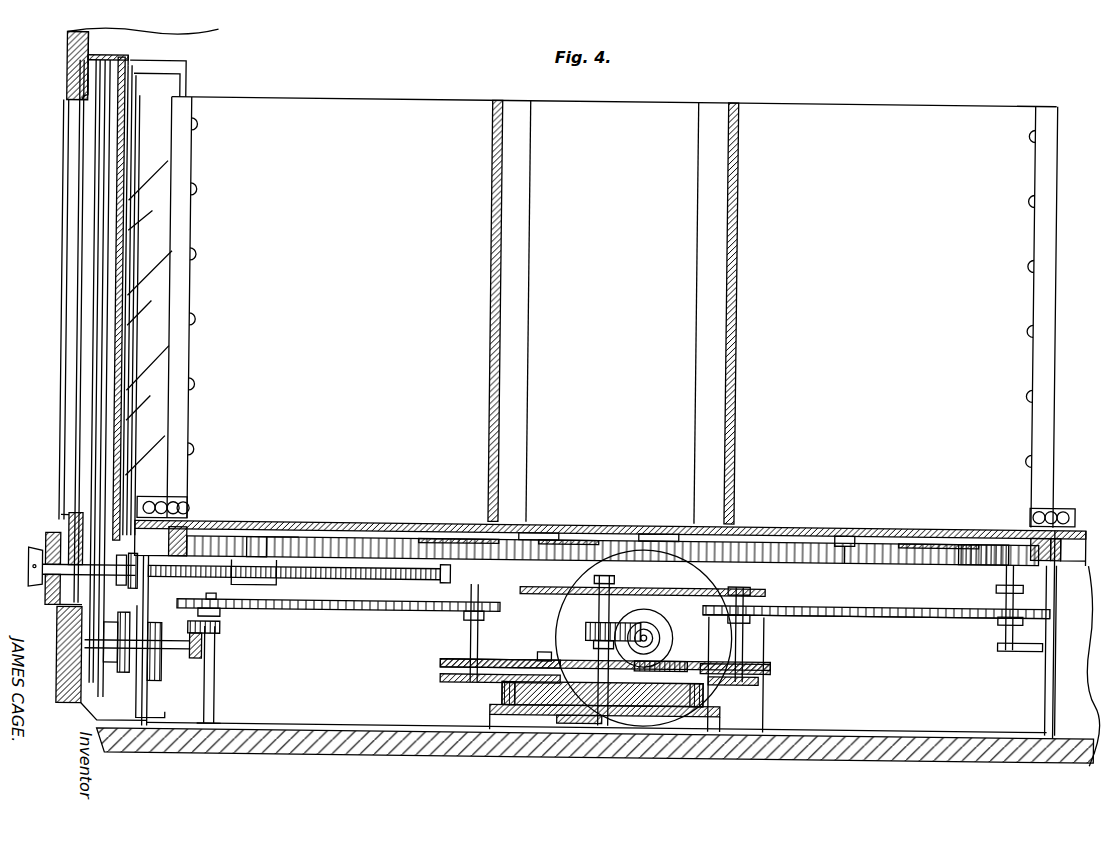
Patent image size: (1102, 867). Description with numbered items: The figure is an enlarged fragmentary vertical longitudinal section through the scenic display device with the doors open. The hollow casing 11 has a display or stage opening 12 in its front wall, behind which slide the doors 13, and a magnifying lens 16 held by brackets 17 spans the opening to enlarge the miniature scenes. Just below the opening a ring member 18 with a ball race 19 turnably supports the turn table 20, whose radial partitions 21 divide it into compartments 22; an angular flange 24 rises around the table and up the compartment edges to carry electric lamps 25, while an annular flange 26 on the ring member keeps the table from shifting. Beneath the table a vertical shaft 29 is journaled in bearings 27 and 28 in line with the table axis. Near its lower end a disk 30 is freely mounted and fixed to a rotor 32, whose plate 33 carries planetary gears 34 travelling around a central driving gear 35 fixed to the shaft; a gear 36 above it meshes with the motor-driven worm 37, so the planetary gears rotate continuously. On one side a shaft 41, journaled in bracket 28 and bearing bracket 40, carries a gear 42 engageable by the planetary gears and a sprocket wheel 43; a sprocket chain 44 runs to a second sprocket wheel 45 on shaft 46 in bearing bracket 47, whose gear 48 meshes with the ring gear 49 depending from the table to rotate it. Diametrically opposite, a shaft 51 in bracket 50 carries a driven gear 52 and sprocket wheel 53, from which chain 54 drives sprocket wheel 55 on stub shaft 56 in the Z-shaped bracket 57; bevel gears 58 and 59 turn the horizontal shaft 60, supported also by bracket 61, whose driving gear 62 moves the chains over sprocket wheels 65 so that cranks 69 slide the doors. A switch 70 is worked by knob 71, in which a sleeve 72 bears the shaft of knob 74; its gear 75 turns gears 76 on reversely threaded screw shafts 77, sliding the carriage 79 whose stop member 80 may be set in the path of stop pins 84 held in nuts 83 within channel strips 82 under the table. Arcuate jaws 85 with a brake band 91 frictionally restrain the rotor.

The hollow casing 11 is at (790, 760).
The display or stage opening 12 is at (66, 236).
The doors or closure members 13 is at (96, 311).
The magnifying lens 16 is at (140, 101).
The brackets 17 is at (106, 64).
The ring member 18 is at (1073, 560).
The ball race 19 is at (1050, 556).
The platform or turn table 20 is at (893, 532).
The partitions or dividing walls 21 is at (489, 337).
The compartments 22 is at (612, 312).
The angular flange 24 is at (162, 504).
The electric lamps 25 is at (198, 330).
The annular flange 26 is at (1065, 524).
The bearing 27 is at (600, 720).
The bearing bracket 28 is at (770, 591).
The vertically disposed shaft 29 is at (600, 586).
The disk 30 is at (555, 716).
The rotor 32 is at (525, 716).
The plate 33 is at (548, 658).
The planetary gears 34 is at (528, 660).
The central driving gear 35 is at (576, 662).
The gear 36 is at (594, 628).
The worm 37 is at (658, 632).
The bearing bracket 40 is at (762, 680).
The vertically disposed shaft 41 is at (747, 642).
The gear 42 is at (770, 668).
The sprocket wheel 43 is at (770, 608).
The sprocket chain 44 is at (925, 615).
The second sprocket wheel 45 is at (1005, 635).
The vertically disposed shaft 46 is at (1000, 585).
The bearing bracket 47 is at (1032, 645).
The gear 48 is at (985, 565).
The ring gear 49 is at (1020, 540).
The bearing bracket 50 is at (443, 682).
The vertically disposed shaft 51 is at (470, 640).
The driven gear 52 is at (443, 667).
The sprocket wheel 53 is at (462, 618).
The sprocket chain 54 is at (332, 608).
The sprocket wheel 55 is at (218, 605).
The stub shaft 56 is at (212, 604).
The Z-shaped bearing bracket 57 is at (184, 680).
The beveled gear 58 is at (222, 634).
The bevel gear 59 is at (200, 655).
The horizontally disposed shaft 60 is at (140, 694).
The bracket 61 is at (140, 700).
The driving gear 62 is at (537, 548).
The sprocket wheels 65 is at (128, 674).
The cranks 69 is at (114, 620).
The electrical contact switch 70 is at (64, 538).
The knob 71 is at (54, 610).
The tubular sleeve 72 is at (42, 570).
The manipulating knob 74 is at (48, 556).
The gear 75 is at (122, 576).
The gears 76 is at (135, 585).
The screw shafts 77 is at (355, 578).
The carriage 79 is at (266, 582).
The stop member 80 is at (290, 530).
The slotted channel strips 82 is at (420, 542).
The nuts 83 is at (845, 544).
The threaded stop pins 84 is at (258, 546).
The arcuate jaws 85 is at (272, 546).
The friction or brake band 91 is at (497, 693).